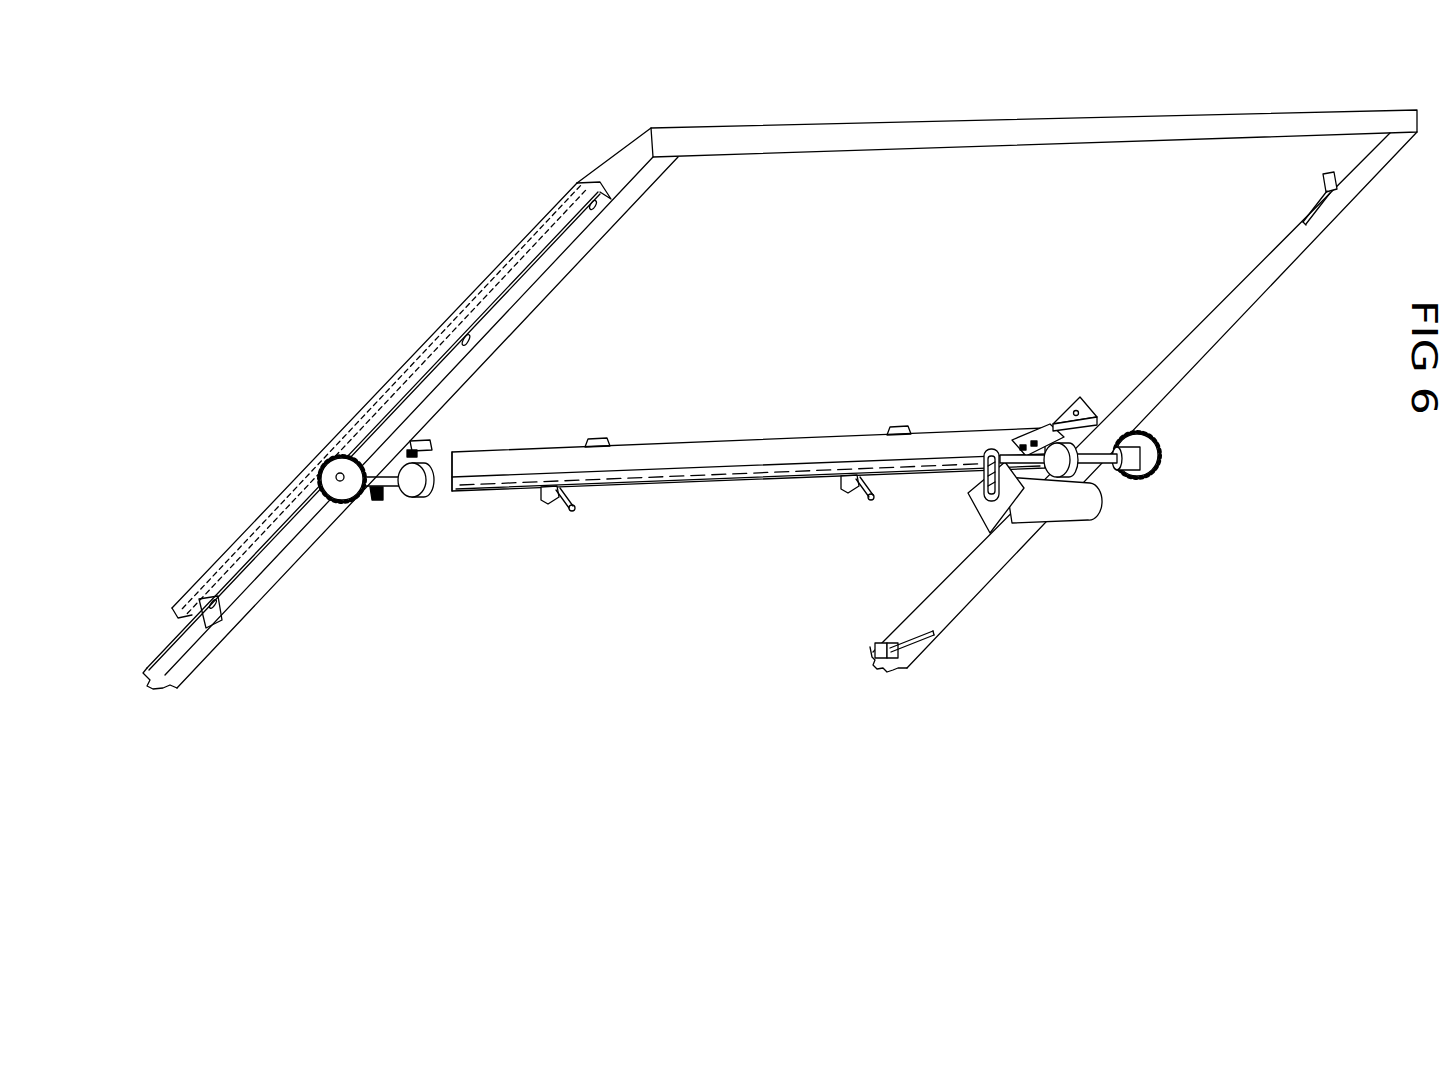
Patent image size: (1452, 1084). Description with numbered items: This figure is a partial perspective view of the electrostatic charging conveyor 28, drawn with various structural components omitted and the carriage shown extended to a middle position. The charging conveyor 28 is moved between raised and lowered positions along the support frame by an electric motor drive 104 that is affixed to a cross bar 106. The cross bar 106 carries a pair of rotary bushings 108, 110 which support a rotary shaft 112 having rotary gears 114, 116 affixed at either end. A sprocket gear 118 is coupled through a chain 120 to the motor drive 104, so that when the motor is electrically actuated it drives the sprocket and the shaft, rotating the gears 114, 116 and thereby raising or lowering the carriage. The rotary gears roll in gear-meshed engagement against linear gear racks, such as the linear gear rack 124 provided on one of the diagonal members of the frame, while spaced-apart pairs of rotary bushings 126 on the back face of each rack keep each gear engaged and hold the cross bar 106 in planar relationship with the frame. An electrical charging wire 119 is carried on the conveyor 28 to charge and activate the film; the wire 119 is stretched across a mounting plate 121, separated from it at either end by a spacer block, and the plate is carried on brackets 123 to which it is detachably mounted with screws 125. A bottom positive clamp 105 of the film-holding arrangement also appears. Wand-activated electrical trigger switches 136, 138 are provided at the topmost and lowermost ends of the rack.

The electrostatic charging conveyor 28 is at (780, 399).
The electric motor drive 104 is at (1108, 523).
The bottom positive clamp 105 is at (1052, 555).
The cross bar 106 is at (701, 356).
The rotary bushing 108 is at (1138, 462).
The rotary bushing 110 is at (357, 428).
The rotary shaft 112 is at (396, 394).
The rotary gear 114 is at (1210, 435).
The rotary gear 116 is at (297, 454).
The sprocket gear 118 is at (1148, 487).
The electrical charging wire 119 is at (748, 617).
The chain 120 is at (1075, 525).
The mounting plate 121 is at (730, 566).
The bracket 123 is at (624, 591).
The linear gear rack 124 is at (379, 401).
The screw 125 is at (658, 621).
The rotary bushing 126 is at (1179, 387).
The wand-activated electrical trigger switch 136 is at (1356, 221).
The wand-activated electrical trigger switch 138 is at (981, 666).